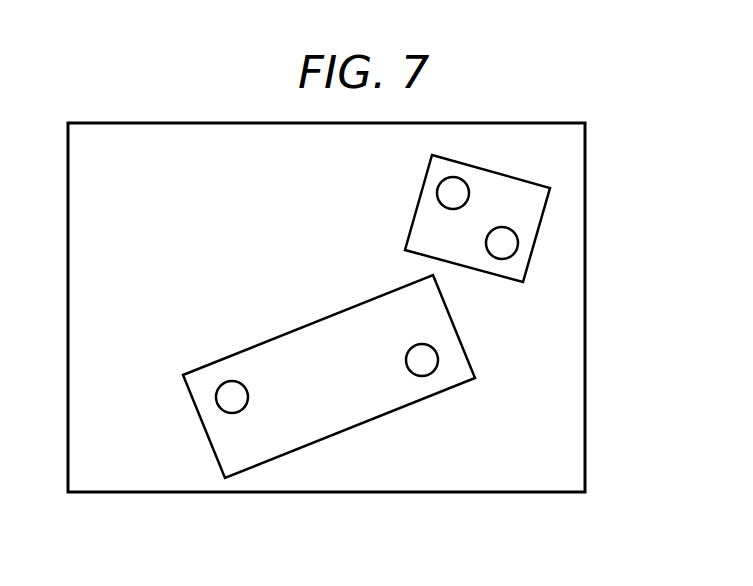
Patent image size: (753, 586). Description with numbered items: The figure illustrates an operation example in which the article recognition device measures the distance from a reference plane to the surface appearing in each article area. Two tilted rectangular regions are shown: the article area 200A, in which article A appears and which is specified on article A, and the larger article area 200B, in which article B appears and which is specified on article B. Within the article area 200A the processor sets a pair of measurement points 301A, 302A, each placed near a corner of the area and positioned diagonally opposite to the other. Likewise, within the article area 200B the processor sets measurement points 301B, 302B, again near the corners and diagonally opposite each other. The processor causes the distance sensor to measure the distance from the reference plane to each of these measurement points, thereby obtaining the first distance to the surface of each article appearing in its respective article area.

The article area 200A is at (540, 230).
The article area 200B is at (213, 459).
The measurement point 301A is at (437, 193).
The measurement point 302A is at (502, 259).
The measurement point 301B is at (235, 381).
The measurement point 302B is at (418, 377).